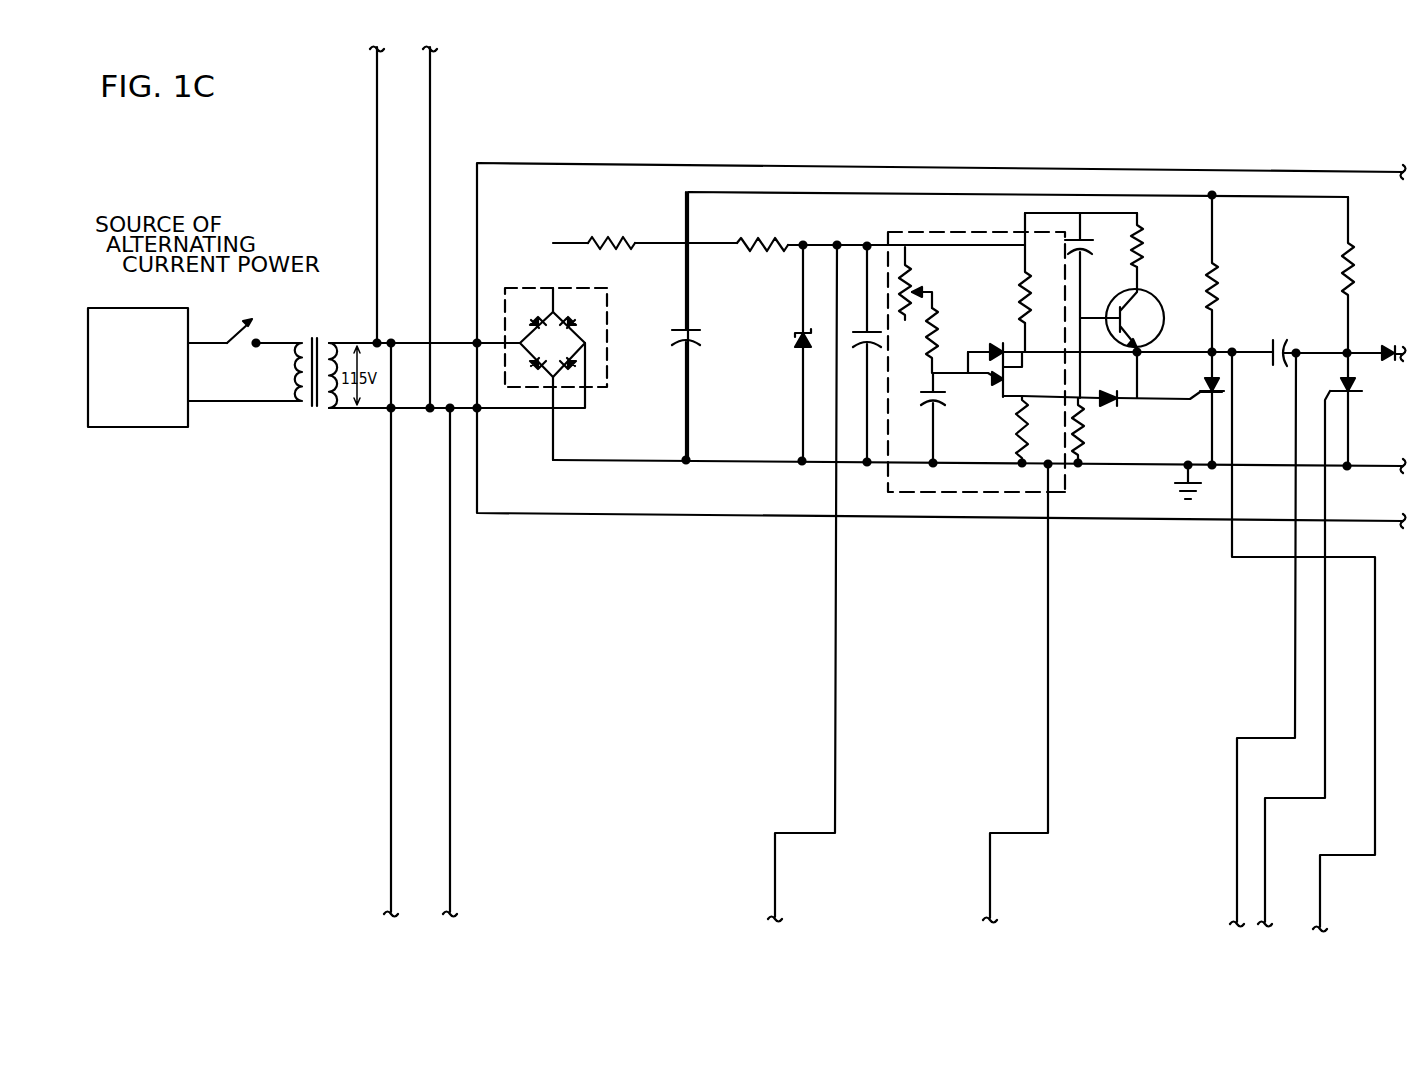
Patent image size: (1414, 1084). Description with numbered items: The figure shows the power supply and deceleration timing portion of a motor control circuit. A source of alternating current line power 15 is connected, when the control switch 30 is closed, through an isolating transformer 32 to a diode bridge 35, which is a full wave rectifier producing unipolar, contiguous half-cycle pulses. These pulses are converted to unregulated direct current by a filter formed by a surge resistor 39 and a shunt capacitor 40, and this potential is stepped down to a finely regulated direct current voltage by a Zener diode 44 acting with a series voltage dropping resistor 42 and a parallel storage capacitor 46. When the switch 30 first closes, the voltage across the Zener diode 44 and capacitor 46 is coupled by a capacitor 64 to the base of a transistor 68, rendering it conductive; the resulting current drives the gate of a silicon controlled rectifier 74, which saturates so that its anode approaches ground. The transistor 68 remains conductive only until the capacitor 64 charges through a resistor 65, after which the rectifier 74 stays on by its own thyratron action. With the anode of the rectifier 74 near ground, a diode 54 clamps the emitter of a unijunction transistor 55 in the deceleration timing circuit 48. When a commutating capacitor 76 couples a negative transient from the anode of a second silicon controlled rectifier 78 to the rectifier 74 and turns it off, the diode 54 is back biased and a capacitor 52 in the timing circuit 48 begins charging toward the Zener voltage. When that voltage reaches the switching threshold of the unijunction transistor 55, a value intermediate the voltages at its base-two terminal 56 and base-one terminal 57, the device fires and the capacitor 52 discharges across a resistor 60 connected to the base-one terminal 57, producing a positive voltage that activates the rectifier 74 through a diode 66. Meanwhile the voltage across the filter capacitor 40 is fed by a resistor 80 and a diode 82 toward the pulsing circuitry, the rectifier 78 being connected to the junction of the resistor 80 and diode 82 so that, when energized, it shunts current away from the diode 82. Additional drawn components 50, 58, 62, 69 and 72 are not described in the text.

The source of alternating current line power 15 is at (148, 322).
The control switch 30 is at (247, 352).
The isolating transformer 32 is at (318, 340).
The diode bridge 35 is at (523, 288).
The surge resistor 39 is at (619, 240).
The series voltage dropping resistor 42 is at (757, 240).
The shunt capacitor 40 is at (697, 330).
The Zener diode 44 is at (800, 348).
The parallel storage capacitor 46 is at (860, 345).
The deceleration timing circuit 48 is at (918, 286).
The resistor 50 is at (940, 325).
The capacitor 52 is at (937, 405).
The diode 54 is at (987, 347).
The unijunction transistor 55 is at (1026, 393).
The base-2 terminal 56 is at (1033, 337).
The base-1 terminal 57 is at (1023, 402).
The emitter 58 is at (987, 380).
The resistor 60 is at (1035, 442).
The resistor 62 is at (1028, 308).
The capacitor 64 is at (1090, 240).
The resistor 65 is at (1082, 452).
The diode 66 is at (1108, 393).
The transistor 68 is at (1164, 302).
The resistor 69 is at (1148, 253).
The resistor 72 is at (1222, 292).
The silicon controlled rectifier 74 is at (1208, 382).
The commutating capacitor 76 is at (1285, 338).
The silicon controlled rectifier 78 is at (1363, 388).
The resistor 80 is at (1355, 268).
The diode 82 is at (1392, 340).